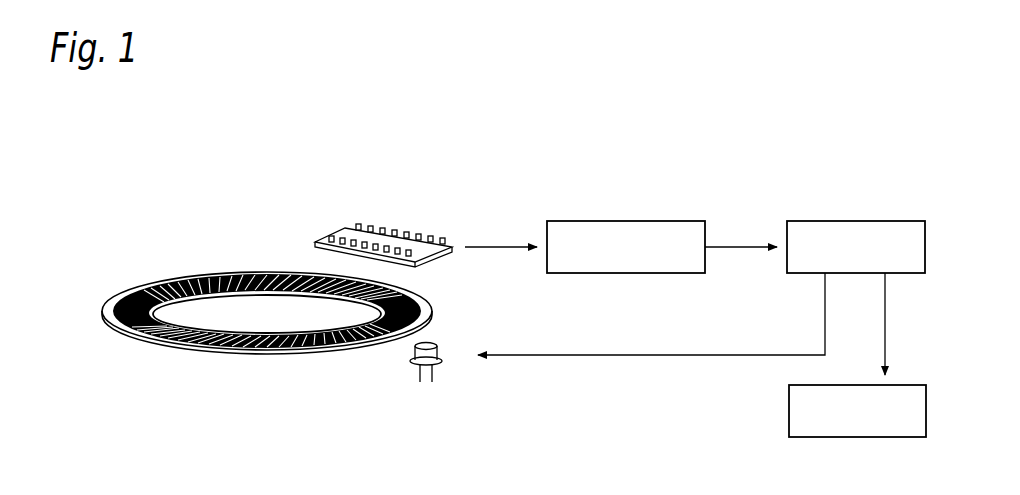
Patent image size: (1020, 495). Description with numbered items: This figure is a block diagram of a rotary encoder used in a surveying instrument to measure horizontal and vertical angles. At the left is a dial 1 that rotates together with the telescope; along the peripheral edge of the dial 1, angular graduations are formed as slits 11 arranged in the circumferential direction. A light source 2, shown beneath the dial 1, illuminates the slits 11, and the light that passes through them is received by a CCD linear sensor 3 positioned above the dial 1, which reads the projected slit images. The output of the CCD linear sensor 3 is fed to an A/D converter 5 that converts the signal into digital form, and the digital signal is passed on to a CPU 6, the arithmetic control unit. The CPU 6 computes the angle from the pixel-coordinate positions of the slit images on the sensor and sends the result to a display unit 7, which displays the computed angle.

The dial 1 is at (235, 275).
The slits 11 is at (297, 273).
The light source 2 is at (413, 373).
The CCD linear sensor 3 is at (415, 247).
The A/D converter 5 is at (632, 220).
The CPU 6 is at (857, 220).
The display unit 7 is at (912, 383).